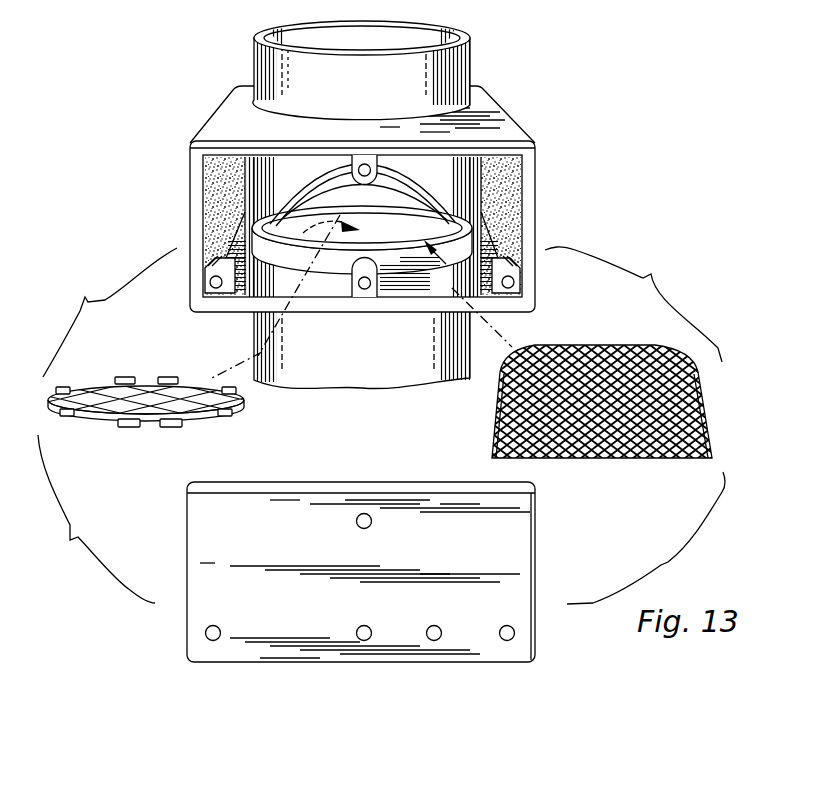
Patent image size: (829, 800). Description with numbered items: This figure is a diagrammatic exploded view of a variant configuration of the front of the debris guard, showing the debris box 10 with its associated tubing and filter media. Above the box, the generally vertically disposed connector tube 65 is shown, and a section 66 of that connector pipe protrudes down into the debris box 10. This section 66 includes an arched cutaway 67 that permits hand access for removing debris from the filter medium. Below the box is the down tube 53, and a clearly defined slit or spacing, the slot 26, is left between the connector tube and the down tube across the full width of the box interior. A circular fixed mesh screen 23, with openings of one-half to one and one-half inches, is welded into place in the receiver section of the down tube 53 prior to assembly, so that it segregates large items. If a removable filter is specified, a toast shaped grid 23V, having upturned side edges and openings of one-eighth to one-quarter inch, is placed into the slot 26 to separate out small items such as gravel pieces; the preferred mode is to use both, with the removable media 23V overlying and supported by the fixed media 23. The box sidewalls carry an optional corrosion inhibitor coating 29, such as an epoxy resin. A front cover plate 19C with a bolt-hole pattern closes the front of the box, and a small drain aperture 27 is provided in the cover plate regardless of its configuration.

The debris box 10 is at (572, 146).
The connector tube 65 is at (463, 62).
The arched cutaway 67 is at (290, 212).
The section of connector pipe 66 is at (258, 203).
The corrosion inhibition coating 29 is at (206, 240).
The slot 26 is at (440, 230).
The down tube 53 is at (260, 325).
The mesh screen 23 is at (222, 423).
The removable mesh filter 23V is at (497, 420).
The front cover plate 19C is at (213, 538).
The aperture 27 is at (436, 641).